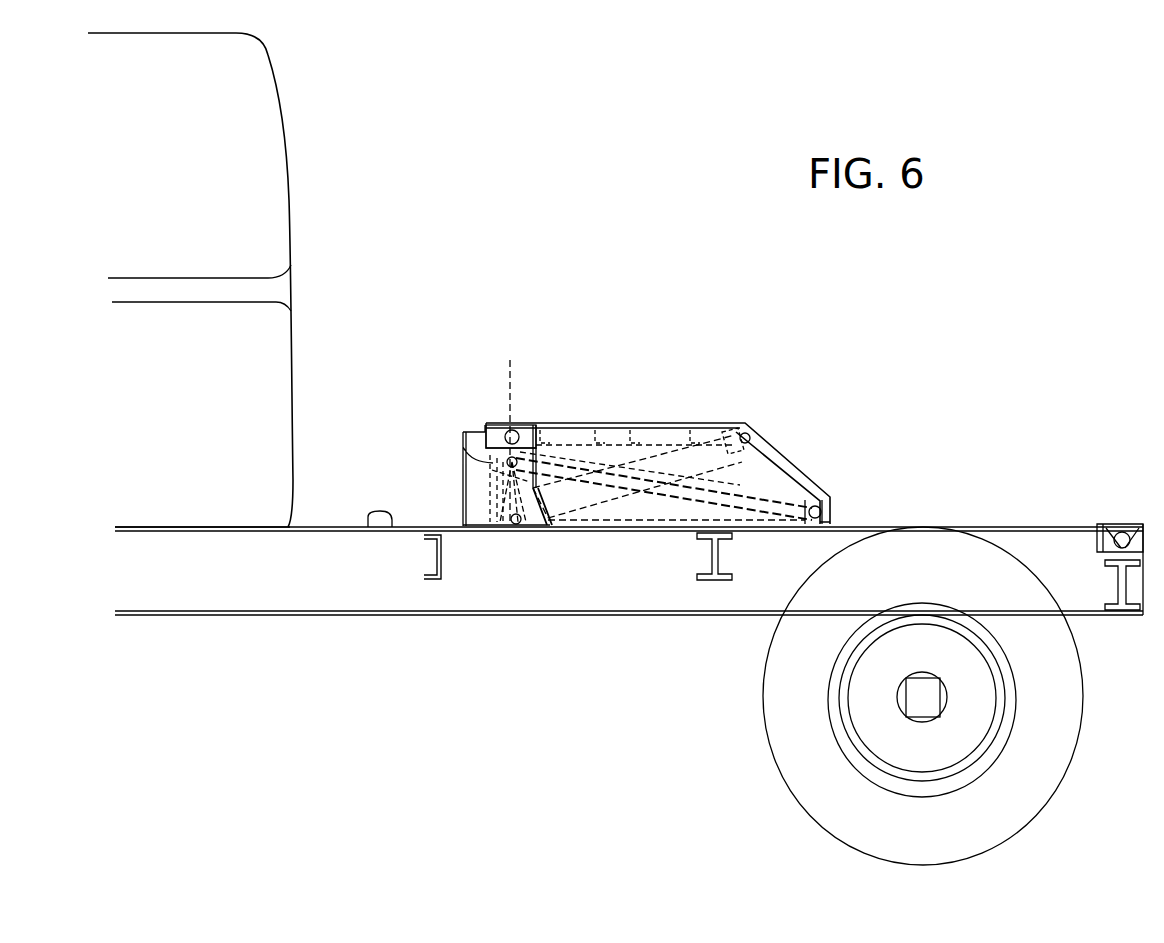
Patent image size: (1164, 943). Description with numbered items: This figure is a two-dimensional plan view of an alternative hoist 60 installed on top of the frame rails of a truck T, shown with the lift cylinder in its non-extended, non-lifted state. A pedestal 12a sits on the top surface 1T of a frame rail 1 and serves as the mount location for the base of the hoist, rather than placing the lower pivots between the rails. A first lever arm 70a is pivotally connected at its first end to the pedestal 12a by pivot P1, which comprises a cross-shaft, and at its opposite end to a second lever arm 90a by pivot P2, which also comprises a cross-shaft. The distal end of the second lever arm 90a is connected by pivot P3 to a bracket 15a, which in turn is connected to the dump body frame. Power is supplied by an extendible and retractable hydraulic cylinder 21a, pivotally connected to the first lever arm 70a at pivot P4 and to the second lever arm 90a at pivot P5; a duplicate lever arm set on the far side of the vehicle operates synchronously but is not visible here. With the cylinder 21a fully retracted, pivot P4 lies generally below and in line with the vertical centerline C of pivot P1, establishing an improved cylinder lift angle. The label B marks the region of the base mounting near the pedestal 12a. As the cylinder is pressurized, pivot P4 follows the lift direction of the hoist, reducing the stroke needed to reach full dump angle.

The truck T is at (292, 262).
The frame rail 1 is at (466, 600).
The top surface of frame rail 1T is at (379, 528).
The hoist 60 is at (640, 382).
The second lever arm 90a is at (570, 425).
The pedestal 12a is at (476, 500).
The bracket 15a is at (522, 425).
The first lever arm 70a is at (636, 508).
The hydraulic cylinder 21a is at (563, 522).
The base assembly B is at (492, 478).
The vertical centerline C is at (510, 360).
The pivot P1 is at (508, 462).
The pivot P2 is at (832, 504).
The pivot P3 is at (506, 425).
The pivot P4 is at (517, 524).
The pivot P5 is at (743, 423).